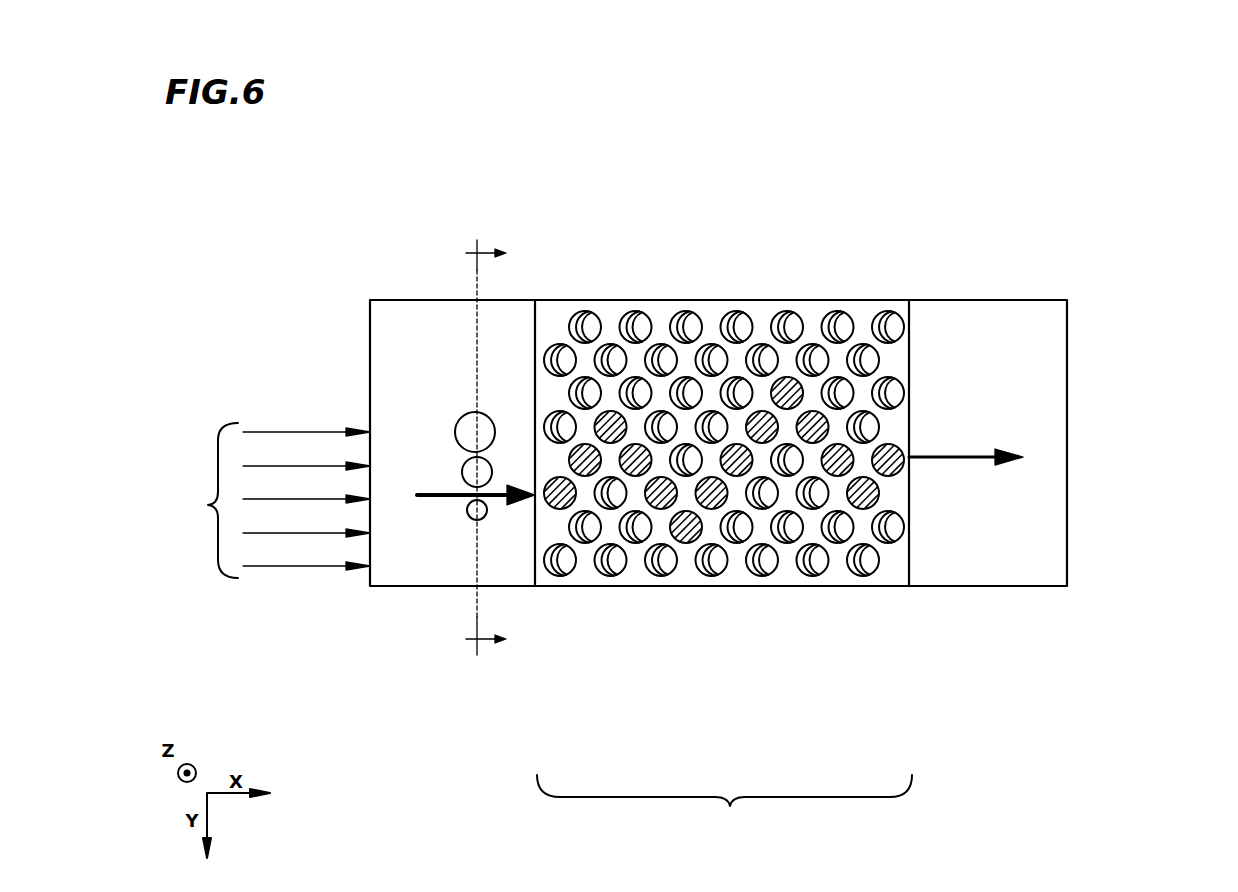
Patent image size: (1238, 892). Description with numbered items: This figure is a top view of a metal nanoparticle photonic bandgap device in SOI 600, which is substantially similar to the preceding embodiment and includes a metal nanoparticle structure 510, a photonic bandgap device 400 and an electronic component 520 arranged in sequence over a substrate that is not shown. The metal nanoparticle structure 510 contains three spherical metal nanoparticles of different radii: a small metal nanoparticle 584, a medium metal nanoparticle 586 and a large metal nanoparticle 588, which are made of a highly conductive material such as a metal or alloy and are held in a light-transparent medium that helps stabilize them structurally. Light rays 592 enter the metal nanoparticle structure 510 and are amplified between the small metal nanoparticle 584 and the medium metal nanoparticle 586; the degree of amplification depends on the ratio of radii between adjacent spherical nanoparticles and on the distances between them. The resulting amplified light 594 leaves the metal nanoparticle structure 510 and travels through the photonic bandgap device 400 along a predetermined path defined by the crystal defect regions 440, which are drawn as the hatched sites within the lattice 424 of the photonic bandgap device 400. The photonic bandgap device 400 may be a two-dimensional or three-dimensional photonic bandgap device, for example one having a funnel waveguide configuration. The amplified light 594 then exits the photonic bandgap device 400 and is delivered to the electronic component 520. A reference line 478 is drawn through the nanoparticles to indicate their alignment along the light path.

The metal nanoparticle photonic bandgap device in SOI 600 is at (1142, 160).
The metal nanoparticle structure 510 is at (400, 312).
The electronic component 520 is at (1047, 306).
The photonic crystal slab 424 is at (602, 306).
The crystal defect regions 440 is at (550, 487).
The photonic bandgap device 400 is at (724, 806).
The large metal nanoparticle 588 is at (469, 425).
The medium metal nanoparticle 586 is at (470, 470).
The small metal nanoparticle 584 is at (475, 518).
The reference axis / line 478 is at (475, 604).
The amplified light 594 is at (503, 500).
The light rays 592 is at (263, 500).